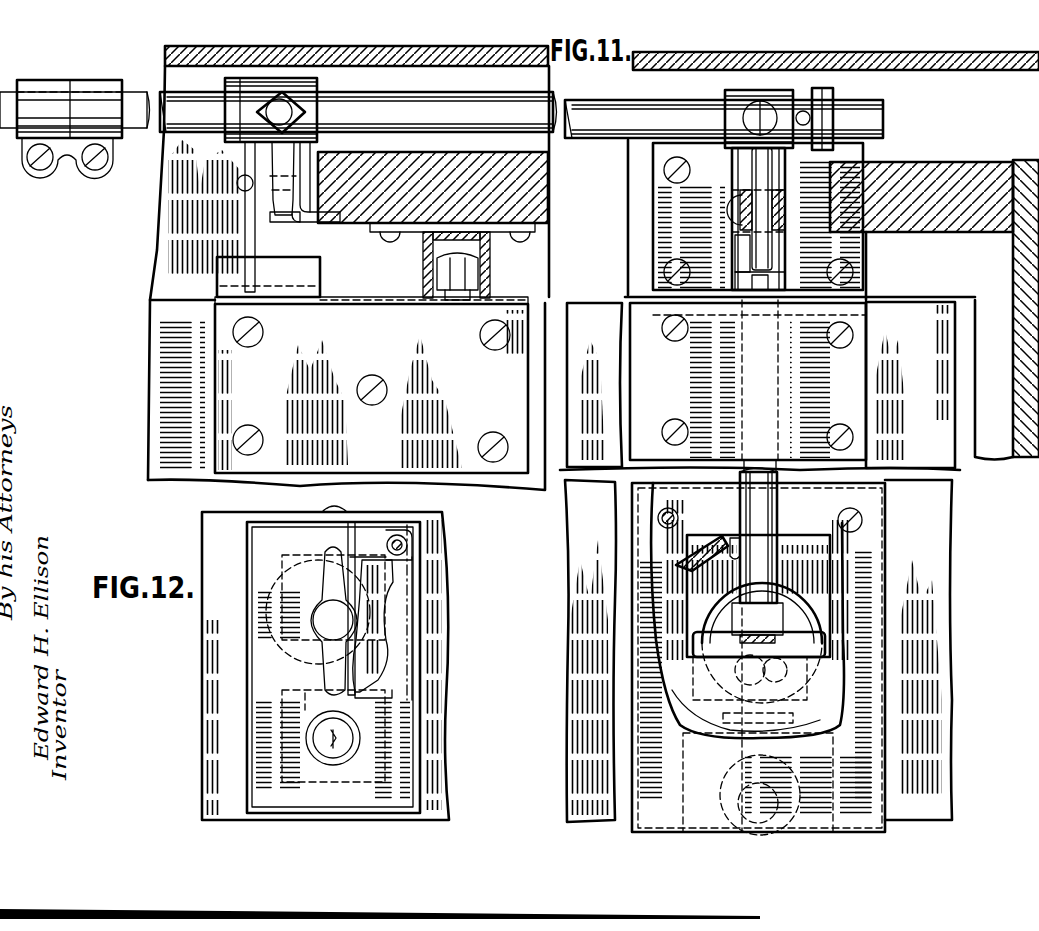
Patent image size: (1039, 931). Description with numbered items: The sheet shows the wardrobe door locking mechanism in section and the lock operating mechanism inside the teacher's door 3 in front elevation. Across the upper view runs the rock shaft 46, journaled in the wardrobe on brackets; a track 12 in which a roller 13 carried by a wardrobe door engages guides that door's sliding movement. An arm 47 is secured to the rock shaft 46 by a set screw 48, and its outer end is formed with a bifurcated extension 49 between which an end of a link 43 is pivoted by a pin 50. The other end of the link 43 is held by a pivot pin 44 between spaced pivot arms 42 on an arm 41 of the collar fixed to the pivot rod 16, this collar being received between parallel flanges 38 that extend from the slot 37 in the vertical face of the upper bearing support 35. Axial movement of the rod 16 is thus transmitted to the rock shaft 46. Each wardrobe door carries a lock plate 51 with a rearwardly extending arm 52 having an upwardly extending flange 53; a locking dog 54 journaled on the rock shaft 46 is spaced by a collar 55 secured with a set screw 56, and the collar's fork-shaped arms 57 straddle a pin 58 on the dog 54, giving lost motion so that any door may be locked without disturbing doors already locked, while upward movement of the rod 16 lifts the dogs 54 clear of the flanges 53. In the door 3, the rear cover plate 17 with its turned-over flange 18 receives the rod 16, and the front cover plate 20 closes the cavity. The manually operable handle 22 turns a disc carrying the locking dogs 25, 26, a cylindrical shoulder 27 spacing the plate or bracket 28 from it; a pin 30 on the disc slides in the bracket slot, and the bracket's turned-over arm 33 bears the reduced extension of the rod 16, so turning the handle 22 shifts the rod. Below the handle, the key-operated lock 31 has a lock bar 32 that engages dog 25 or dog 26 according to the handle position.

In FIG. 12, the teacher's door 3 is at (446, 648).
In FIG. 11, the track 12 is at (491, 268).
In FIG. 11, the roller 13 is at (450, 270).
In FIG. 11, the pivot rod 16 is at (780, 380).
In FIG. 12, the pivot rod 16 is at (755, 566).
In FIG. 11, the rear cover plate 17 is at (850, 367).
In FIG. 11, the turned-over flange 18 is at (741, 332).
In FIG. 12, the front cover plate 20 is at (398, 737).
In FIG. 12, the manually operable handle 22 is at (332, 660).
In FIG. 12, the locking dog 25 is at (388, 685).
In FIG. 12, the locking dog 26 is at (392, 578).
In FIG. 12, the cylindrical shoulder 27 is at (790, 590).
In FIG. 12, the plate or bracket 28 is at (800, 646).
In FIG. 12, the pin 30 is at (750, 665).
In FIG. 12, the lock 31 is at (343, 745).
In FIG. 12, the lock bar 32 is at (306, 694).
In FIG. 12, the turned-over arm 33 is at (742, 618).
In FIG. 11, the upper bearing support 35 is at (733, 245).
In FIG. 11, the slot 37 is at (737, 172).
In FIG. 11, the parallel flanges 38 is at (733, 242).
In FIG. 11, the arm 41 is at (782, 222).
In FIG. 11, the spaced pivot arms 42 is at (740, 203).
In FIG. 11, the link 43 is at (771, 288).
In FIG. 11, the pivot pin 44 is at (738, 213).
In FIG. 11, the rock shaft 46 is at (468, 110).
In FIG. 11, the arm 47 is at (758, 168).
In FIG. 11, the set screw 48 is at (757, 122).
In FIG. 11, the bifurcated extension 49 is at (752, 292).
In FIG. 11, the pin 50 is at (733, 282).
In FIG. 11, the lock plate 51 is at (272, 397).
In FIG. 11, the rearwardly extending arm 52 is at (381, 305).
In FIG. 11, the upwardly extending flange 53 is at (271, 274).
In FIG. 11, the locking dog 54 is at (247, 250).
In FIG. 11, the collar 55 is at (232, 86).
In FIG. 11, the set screw 56 is at (277, 108).
In FIG. 11, the fork-shaped arms 57 is at (297, 196).
In FIG. 11, the pin 58 is at (262, 183).